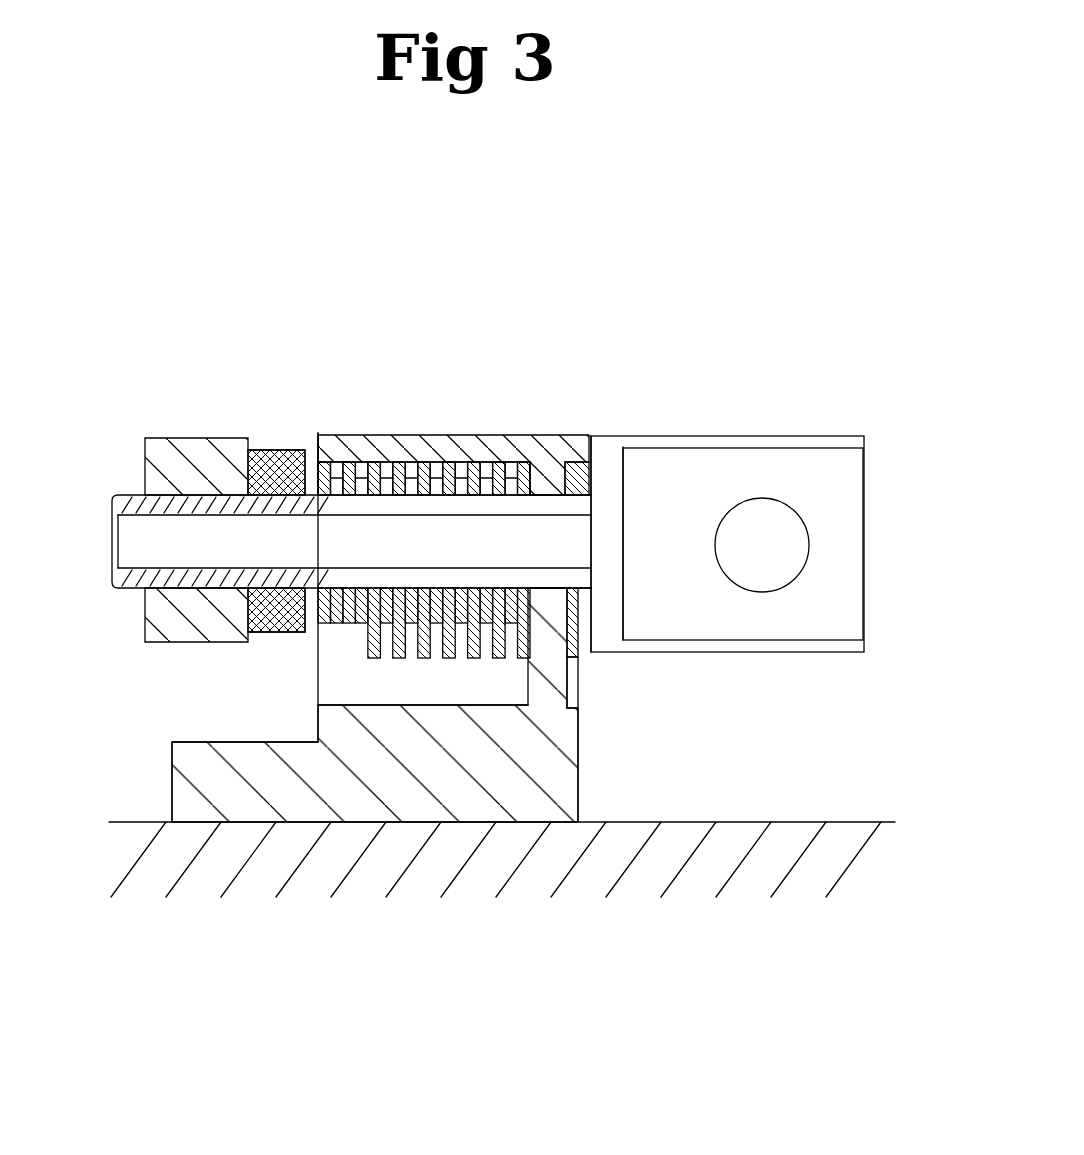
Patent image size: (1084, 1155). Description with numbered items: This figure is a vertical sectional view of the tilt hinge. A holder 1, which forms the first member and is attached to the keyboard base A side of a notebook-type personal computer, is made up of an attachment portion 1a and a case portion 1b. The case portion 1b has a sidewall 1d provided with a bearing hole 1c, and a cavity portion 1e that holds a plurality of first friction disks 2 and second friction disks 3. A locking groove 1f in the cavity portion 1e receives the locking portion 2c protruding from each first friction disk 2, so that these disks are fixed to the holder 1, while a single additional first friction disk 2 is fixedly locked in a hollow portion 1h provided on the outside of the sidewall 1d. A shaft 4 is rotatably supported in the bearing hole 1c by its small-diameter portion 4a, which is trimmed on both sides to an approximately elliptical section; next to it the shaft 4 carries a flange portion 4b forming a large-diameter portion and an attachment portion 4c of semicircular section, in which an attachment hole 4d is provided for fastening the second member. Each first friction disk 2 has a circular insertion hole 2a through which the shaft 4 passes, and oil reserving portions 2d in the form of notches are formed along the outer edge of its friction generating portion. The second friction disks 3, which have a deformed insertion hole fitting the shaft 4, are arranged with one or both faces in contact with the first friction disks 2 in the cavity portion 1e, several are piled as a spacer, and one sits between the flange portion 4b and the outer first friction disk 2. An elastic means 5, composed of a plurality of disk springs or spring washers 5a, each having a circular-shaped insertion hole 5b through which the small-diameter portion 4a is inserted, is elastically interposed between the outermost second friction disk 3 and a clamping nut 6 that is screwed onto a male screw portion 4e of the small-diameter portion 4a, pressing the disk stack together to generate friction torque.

The holder 1 is at (452, 420).
The attachment portion 1a is at (200, 748).
The case portion 1b is at (487, 433).
The bearing hole 1c is at (547, 496).
The sidewall 1d is at (578, 712).
The cavity portion 1e is at (343, 457).
The locking groove 1f is at (517, 690).
The hollow portion 1h is at (574, 691).
The first friction disk 2 is at (397, 460).
The circular insertion hole 2a is at (400, 462).
The locking portion 2c is at (387, 630).
The oil reserving portion 2d is at (444, 462).
The second friction disk 3 is at (368, 645).
The shaft 4 is at (712, 402).
The small-diameter portion 4a is at (128, 543).
The flange portion 4b is at (603, 457).
The attachment portion 4c is at (832, 490).
The attachment hole 4d is at (800, 550).
The male screw portion 4e is at (125, 590).
The elastic means 5 is at (270, 428).
The disk spring 5a is at (280, 592).
The circular-shaped insertion hole 5b is at (300, 497).
The clamping nut 6 is at (172, 447).
The keyboard base A is at (828, 800).